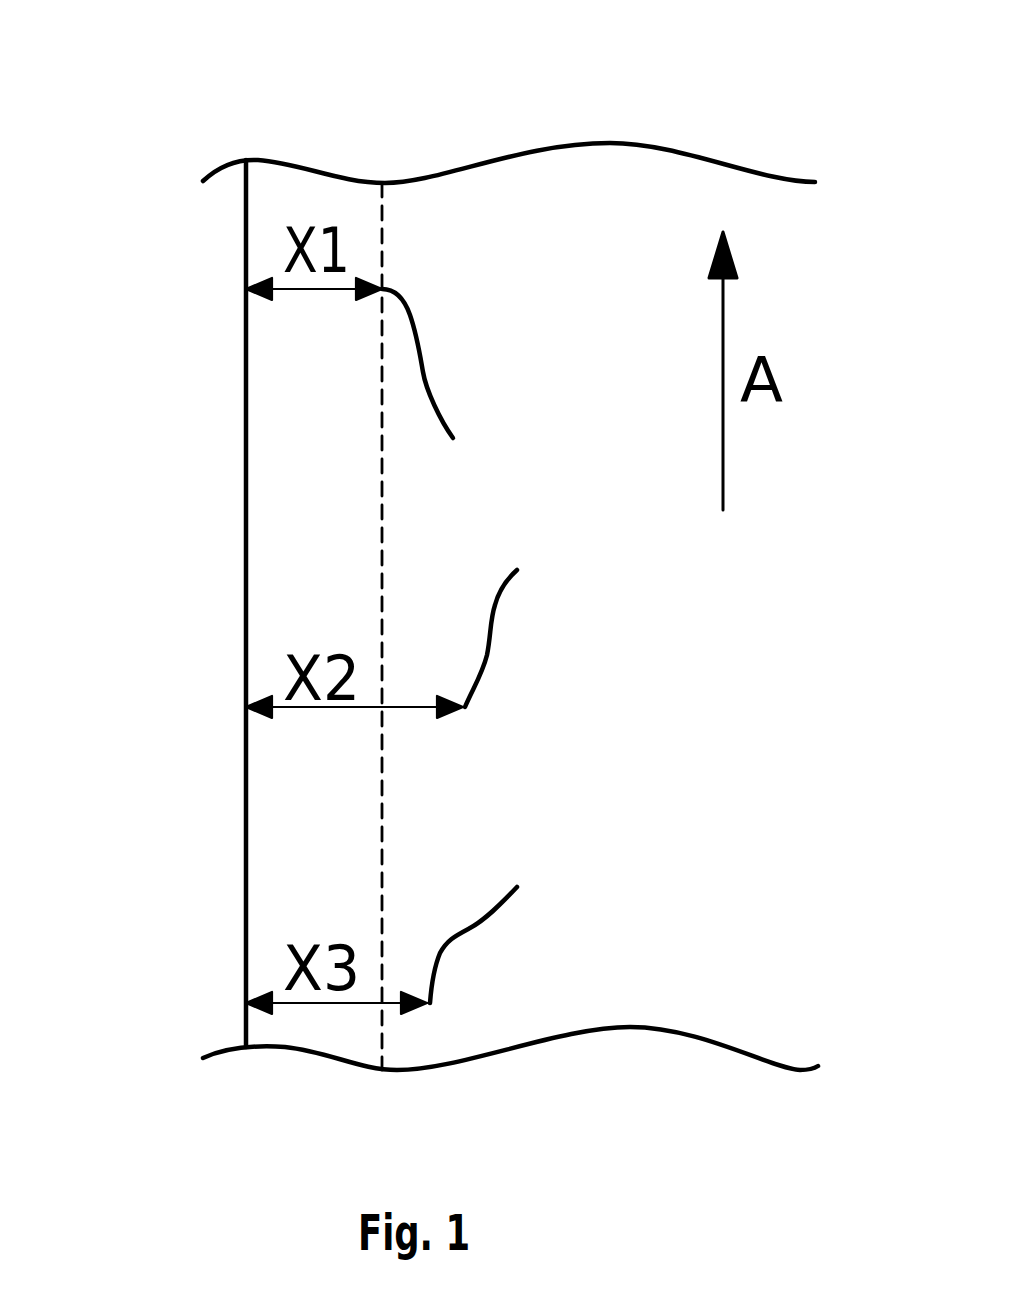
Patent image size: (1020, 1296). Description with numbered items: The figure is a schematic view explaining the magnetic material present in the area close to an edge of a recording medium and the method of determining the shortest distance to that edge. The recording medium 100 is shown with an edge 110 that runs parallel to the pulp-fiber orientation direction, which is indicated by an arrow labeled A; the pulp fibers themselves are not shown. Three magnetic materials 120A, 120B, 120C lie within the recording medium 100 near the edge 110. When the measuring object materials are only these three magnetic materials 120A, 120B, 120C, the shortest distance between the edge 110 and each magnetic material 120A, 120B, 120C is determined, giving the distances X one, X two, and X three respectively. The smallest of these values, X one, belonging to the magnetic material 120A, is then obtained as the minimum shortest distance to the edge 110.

The recording medium 100 is at (633, 167).
The edge 110 is at (243, 822).
The magnetic material 120A is at (435, 412).
The magnetic material 120B is at (493, 618).
The magnetic material 120C is at (502, 907).